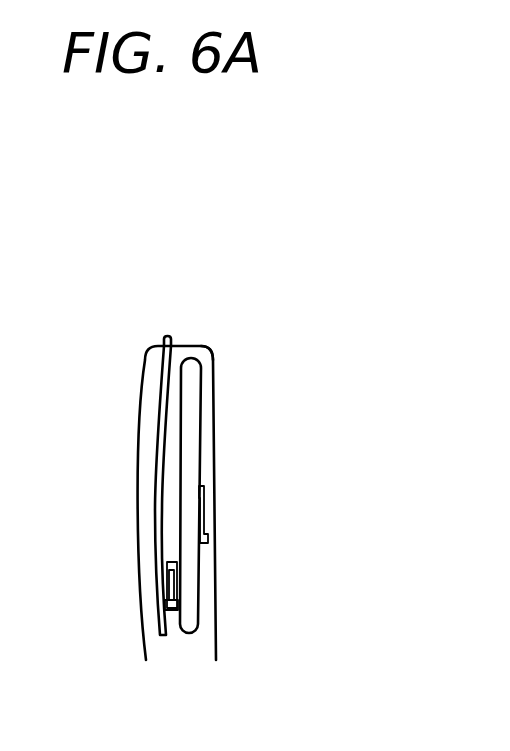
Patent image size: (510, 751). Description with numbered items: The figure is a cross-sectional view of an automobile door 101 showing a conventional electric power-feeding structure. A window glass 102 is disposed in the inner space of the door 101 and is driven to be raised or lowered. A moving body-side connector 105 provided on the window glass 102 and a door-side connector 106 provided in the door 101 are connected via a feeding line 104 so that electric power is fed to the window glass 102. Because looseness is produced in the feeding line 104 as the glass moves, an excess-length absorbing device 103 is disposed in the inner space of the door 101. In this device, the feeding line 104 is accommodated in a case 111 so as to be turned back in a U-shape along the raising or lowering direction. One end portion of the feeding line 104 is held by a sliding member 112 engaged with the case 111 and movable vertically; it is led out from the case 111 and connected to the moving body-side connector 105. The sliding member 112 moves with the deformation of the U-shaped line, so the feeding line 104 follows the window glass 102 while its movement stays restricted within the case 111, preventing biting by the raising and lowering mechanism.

The door 101 is at (213, 398).
The window glass 102 is at (155, 431).
The excess-length absorbing device 103 is at (216, 363).
The feeding line 104 is at (168, 578).
The moving body-side connector 105 is at (166, 606).
The door-side connector 106 is at (210, 539).
The case 111 is at (193, 453).
The sliding member 112 is at (167, 560).